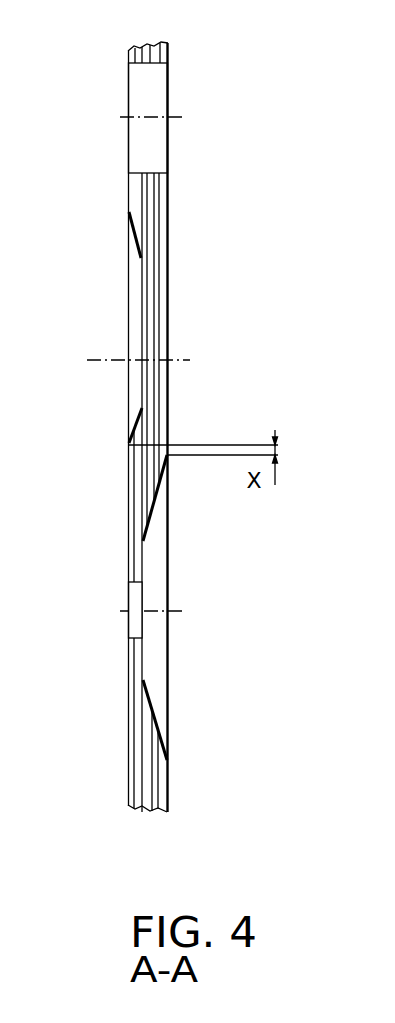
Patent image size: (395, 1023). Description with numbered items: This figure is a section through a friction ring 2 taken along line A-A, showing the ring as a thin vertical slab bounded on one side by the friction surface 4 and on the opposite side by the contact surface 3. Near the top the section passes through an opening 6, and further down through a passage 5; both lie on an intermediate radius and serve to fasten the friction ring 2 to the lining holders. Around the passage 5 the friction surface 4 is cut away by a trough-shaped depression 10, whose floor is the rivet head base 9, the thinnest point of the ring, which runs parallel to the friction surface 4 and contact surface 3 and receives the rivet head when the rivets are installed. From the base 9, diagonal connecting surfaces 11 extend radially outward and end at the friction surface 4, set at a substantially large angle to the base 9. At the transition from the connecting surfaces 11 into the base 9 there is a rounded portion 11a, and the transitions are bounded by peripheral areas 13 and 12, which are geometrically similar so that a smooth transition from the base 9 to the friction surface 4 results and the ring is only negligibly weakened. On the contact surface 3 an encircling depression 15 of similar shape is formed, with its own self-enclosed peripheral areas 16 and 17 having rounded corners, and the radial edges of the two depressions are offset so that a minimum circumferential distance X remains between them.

The friction ring 2 is at (155, 393).
The contact surface 3 is at (125, 735).
The friction surface 4 is at (171, 328).
The passage 5 is at (131, 630).
The opening 6 is at (155, 150).
The rivet head base 9 is at (147, 647).
The trough-shaped depression 10 is at (184, 590).
The connecting surface 11 is at (151, 504).
The rounded portion 11a is at (147, 679).
The peripheral area 12 is at (173, 764).
The peripheral area 13 is at (147, 543).
The encircling depression 15 is at (125, 322).
The peripheral area 16 is at (126, 447).
The peripheral area 17 is at (135, 258).